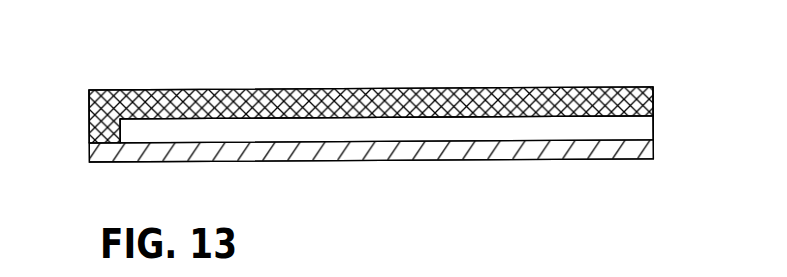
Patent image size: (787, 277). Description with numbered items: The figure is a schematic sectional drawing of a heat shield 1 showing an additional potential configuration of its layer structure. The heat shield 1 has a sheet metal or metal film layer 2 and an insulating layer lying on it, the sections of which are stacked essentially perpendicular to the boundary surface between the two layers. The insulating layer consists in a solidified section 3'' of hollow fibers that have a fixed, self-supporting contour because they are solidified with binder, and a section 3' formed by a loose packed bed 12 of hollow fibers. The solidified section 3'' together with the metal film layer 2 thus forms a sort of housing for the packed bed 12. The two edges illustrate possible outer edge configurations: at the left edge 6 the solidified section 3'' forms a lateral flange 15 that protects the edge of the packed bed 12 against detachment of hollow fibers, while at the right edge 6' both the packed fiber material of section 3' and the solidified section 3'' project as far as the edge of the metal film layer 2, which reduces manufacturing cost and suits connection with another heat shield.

The heat shield 1 is at (694, 100).
The metal film layer 2 is at (367, 162).
The section of insulating layer 3' is at (386, 90).
The solidified section of insulating layer 3'' is at (371, 81).
The left edge 6 is at (77, 83).
The right edge 6' is at (675, 86).
The packed bed 12 is at (457, 116).
The lateral flange 15 is at (117, 129).